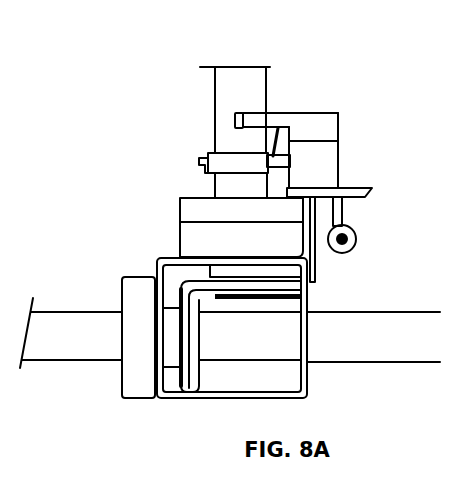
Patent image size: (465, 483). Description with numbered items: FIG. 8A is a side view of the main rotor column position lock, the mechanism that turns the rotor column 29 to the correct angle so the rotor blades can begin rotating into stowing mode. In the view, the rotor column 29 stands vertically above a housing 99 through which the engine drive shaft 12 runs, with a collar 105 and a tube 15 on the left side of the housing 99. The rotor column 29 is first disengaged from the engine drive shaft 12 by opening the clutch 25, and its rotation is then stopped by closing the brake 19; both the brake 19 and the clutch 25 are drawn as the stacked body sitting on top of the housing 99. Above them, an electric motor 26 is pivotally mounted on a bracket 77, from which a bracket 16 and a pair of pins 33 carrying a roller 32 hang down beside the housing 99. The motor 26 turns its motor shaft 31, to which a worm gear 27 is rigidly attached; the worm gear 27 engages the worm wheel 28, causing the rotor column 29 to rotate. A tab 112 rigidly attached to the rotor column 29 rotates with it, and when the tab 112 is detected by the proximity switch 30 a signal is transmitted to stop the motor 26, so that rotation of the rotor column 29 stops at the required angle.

The engine drive shaft 12 is at (387, 362).
The inlet tube 15 is at (50, 362).
The bracket 16 is at (317, 238).
The brake 19 is at (180, 209).
The clutch 25 is at (180, 240).
The electric motor 26 is at (340, 160).
The worm gear 27 is at (230, 152).
The worm wheel 28 is at (205, 168).
The rotor column 29 is at (213, 94).
The proximity switch 30 is at (241, 112).
The motor shaft 31 is at (278, 128).
The roller 32 is at (357, 238).
The pin 33 is at (350, 208).
The bracket 77 is at (370, 190).
The housing 99 is at (307, 370).
The collar 105 is at (120, 293).
The tab 112 is at (240, 142).